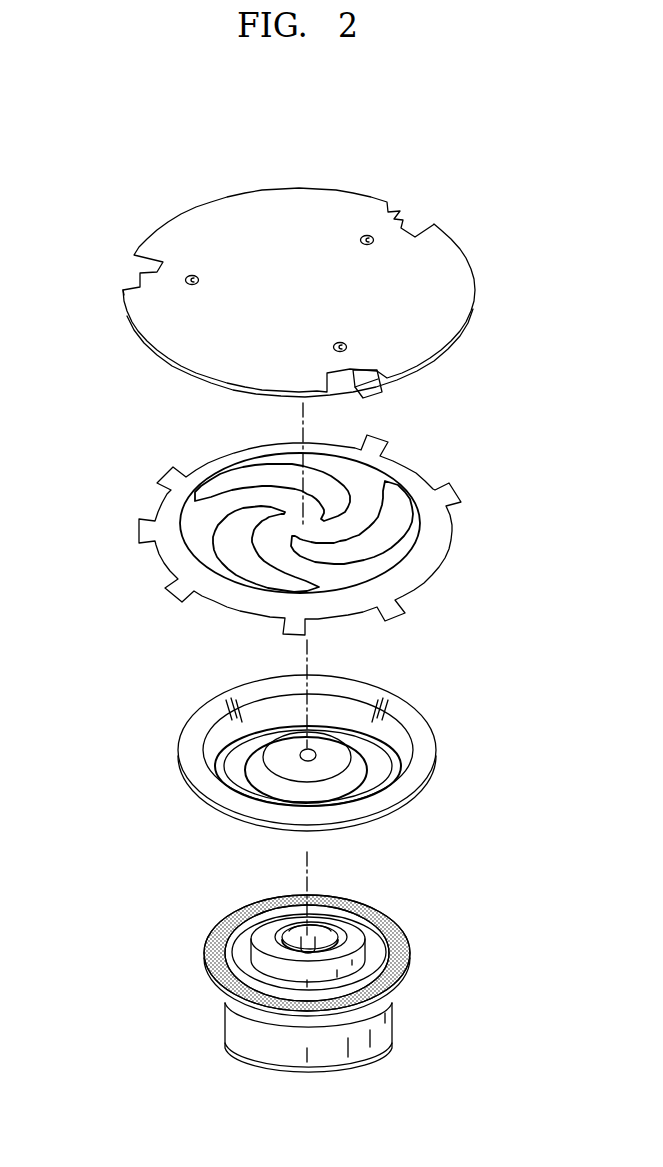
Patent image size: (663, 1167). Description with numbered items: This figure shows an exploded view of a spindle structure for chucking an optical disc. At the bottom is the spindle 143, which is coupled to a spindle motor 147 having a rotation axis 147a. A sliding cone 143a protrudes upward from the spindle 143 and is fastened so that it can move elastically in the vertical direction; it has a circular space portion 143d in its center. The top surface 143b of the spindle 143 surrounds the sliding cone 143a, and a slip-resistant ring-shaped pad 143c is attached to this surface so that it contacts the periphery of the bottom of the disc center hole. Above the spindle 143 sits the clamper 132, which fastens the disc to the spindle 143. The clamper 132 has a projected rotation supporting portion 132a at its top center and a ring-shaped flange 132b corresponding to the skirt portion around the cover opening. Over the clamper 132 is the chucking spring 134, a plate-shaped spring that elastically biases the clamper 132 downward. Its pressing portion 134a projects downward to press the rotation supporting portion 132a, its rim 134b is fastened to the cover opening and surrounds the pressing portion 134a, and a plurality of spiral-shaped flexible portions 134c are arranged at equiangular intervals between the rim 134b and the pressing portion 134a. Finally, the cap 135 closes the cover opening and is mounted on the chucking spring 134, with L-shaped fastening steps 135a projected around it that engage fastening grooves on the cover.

The cap 135 is at (100, 243).
The L-shaped fastening steps 135a is at (380, 400).
The chucking spring 134 is at (104, 488).
The pressing portion 134a is at (291, 528).
The rim 134b is at (433, 547).
The flexible portions 134c is at (372, 547).
The clamper 132 is at (155, 716).
The projected rotation supporting portion 132a is at (303, 750).
The ring-shaped flange 132b is at (355, 685).
The spindle 143 is at (195, 938).
The sliding cone 143a is at (262, 938).
The top surface 143b is at (365, 928).
The slip-resistant ring-shaped pad 143c is at (392, 940).
The circular space portion 143d is at (322, 940).
The spindle motor 147 is at (383, 1020).
The rotation axis 147a is at (300, 940).